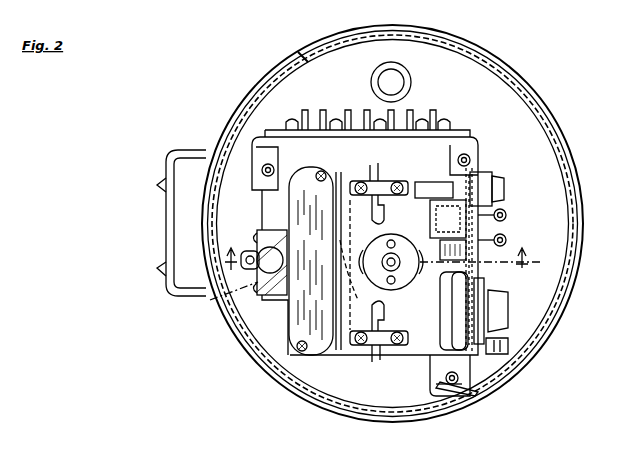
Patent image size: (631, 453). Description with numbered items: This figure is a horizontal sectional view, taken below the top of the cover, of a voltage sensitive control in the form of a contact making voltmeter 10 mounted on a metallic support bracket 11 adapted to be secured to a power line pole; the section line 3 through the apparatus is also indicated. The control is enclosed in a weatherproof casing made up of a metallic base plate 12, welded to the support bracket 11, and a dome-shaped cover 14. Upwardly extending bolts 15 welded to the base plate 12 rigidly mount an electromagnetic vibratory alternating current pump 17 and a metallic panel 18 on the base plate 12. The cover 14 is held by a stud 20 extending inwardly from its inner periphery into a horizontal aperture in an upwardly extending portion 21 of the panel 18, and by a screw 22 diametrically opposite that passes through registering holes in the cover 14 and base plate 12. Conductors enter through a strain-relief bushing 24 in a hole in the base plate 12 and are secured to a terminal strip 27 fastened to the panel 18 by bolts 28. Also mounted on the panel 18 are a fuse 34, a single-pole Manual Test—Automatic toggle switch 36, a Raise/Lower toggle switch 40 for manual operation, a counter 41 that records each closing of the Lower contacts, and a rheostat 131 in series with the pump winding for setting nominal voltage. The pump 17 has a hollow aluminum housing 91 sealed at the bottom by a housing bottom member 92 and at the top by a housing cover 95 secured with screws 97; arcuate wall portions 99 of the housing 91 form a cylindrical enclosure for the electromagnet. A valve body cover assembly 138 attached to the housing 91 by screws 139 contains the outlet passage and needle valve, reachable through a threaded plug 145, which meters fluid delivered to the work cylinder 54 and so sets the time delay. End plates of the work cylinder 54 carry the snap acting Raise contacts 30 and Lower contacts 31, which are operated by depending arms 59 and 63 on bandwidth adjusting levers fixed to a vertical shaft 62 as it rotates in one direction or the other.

The contact making voltmeter 10 is at (520, 140).
The support bracket 11 is at (176, 296).
The base plate 12 is at (572, 236).
The cover 14 is at (571, 268).
The bolts 15 is at (266, 178).
The electromagnetic vibratory alternating current pump 17 is at (320, 308).
The panel 18 is at (473, 138).
The stud 20 is at (436, 396).
The upwardly extending portion of panel 21 is at (466, 396).
The screw 22 is at (303, 56).
The strain-relief bushing 24 is at (372, 72).
The terminal strip 27 is at (323, 112).
The bolts 28 is at (292, 120).
The Raise contacts 30 is at (368, 167).
The Lower contacts 31 is at (366, 371).
The fuse 34 is at (503, 189).
The Manual Test—Automatic toggle switch 36 is at (506, 214).
The toggle switch 40 is at (506, 239).
The counter 41 is at (509, 348).
The work cylinder 54 is at (384, 300).
The depending arm 59 is at (404, 248).
The vertical shaft 62 is at (386, 259).
The depending arm 63 is at (437, 262).
The pump housing 91 is at (290, 337).
The housing bottom member 92 is at (280, 232).
The housing cover 95 is at (303, 183).
The screws 97 is at (320, 170).
The arcuate wall portions 99 is at (364, 296).
The rheostat 131 is at (503, 312).
The valve body cover assembly 138 is at (258, 288).
The screws 139 is at (240, 262).
The plug 145 is at (272, 296).
The section line 3 is at (375, 274).